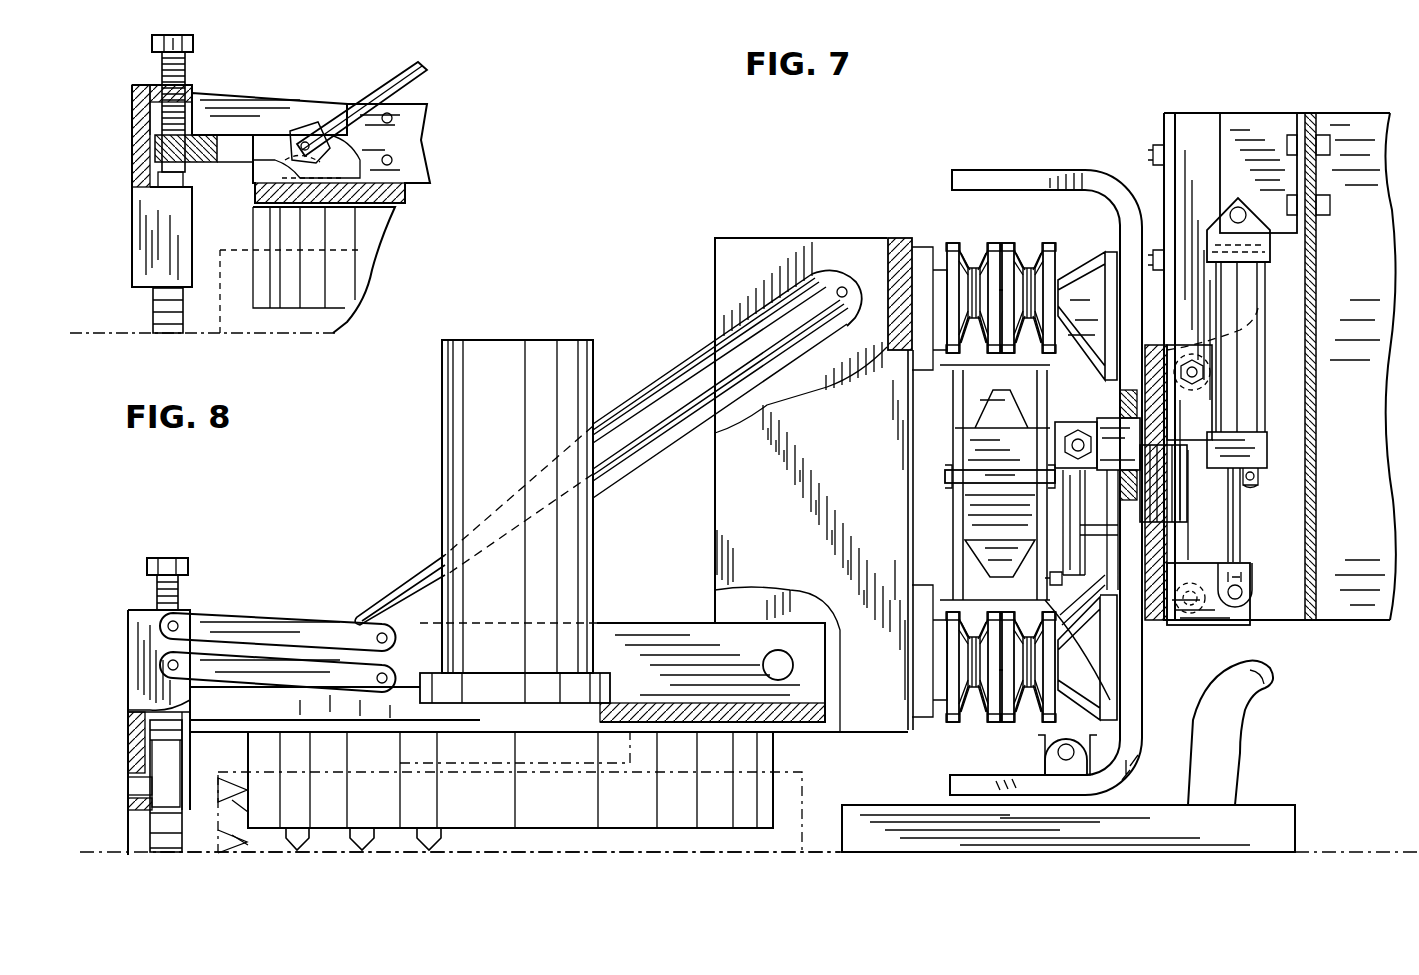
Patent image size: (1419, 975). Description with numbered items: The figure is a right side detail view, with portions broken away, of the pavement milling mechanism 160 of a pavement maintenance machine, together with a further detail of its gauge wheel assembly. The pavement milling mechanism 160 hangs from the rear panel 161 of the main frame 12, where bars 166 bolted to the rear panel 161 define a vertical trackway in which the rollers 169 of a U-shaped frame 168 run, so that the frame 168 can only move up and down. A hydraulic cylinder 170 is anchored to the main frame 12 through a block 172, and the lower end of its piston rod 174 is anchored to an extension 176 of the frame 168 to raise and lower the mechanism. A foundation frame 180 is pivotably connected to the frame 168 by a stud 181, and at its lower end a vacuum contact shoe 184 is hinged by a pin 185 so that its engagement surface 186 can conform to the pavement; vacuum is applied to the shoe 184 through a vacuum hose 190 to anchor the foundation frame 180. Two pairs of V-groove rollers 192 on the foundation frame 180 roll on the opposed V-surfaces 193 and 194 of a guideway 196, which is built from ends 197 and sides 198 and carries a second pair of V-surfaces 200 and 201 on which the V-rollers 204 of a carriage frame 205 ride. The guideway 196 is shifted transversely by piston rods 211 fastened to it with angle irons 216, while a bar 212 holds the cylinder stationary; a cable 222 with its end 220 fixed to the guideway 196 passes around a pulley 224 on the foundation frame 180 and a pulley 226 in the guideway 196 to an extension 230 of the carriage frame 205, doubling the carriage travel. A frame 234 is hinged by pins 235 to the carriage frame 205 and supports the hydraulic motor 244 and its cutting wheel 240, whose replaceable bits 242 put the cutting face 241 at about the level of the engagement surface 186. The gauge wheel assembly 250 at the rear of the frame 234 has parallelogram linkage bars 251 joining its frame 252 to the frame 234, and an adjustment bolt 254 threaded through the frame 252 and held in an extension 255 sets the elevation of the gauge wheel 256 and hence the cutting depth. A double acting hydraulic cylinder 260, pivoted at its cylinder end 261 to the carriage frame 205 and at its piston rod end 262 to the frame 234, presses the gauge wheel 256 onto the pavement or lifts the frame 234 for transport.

In FIG. 7, the main frame 12 is at (1350, 113).
In FIG. 7, the pavement milling mechanism 160 is at (611, 269).
In FIG. 7, the rear panel 161 is at (1318, 240).
In FIG. 7, the bars 166 is at (1164, 135).
In FIG. 7, the U-shaped frame 168 is at (1152, 622).
In FIG. 7, the rollers 169 is at (1260, 330).
In FIG. 7, the hydraulic cylinder 170 is at (1245, 285).
In FIG. 7, the block 172 is at (1243, 115).
In FIG. 7, the piston rod 174 is at (1240, 520).
In FIG. 7, the extension 176 is at (1240, 628).
In FIG. 7, the foundation frame 180 is at (1040, 170).
In FIG. 7, the stud 181 is at (1189, 462).
In FIG. 7, the vacuum contact shoe 184 is at (983, 852).
In FIG. 7, the pin 185 is at (1056, 752).
In FIG. 7, the engagement surface 186 is at (1112, 873).
In FIG. 7, the vacuum hose 190 is at (1240, 758).
In FIG. 7, the V-groove rollers 192 is at (1030, 252).
In FIG. 7, the V-surface 193 is at (1062, 340).
In FIG. 7, the V-surface 194 is at (1100, 690).
In FIG. 7, the guideway 196 is at (887, 433).
In FIG. 7, the ends 197 is at (1050, 345).
In FIG. 7, the sides 198 is at (1038, 530).
In FIG. 7, the V-surface 200 is at (950, 330).
In FIG. 7, the V-surface 201 is at (900, 568).
In FIG. 7, the V-rollers 204 is at (958, 252).
In FIG. 7, the carriage frame 205 is at (762, 245).
In FIG. 7, the piston rods 211 is at (1100, 408).
In FIG. 7, the bar 212 is at (1167, 400).
In FIG. 7, the angle irons 216 is at (1067, 401).
In FIG. 7, the cable end 220 is at (1062, 580).
In FIG. 7, the cable 222 is at (1060, 485).
In FIG. 7, the pulley 224 is at (1150, 548).
In FIG. 7, the pulley 226 is at (1028, 465).
In FIG. 7, the extension 230 is at (945, 478).
In FIG. 8, the frame 234 is at (415, 118).
In FIG. 7, the frame 234 is at (622, 647).
In FIG. 7, the pins 235 is at (757, 654).
In FIG. 8, the cutting wheel 240 is at (380, 235).
In FIG. 7, the cutting wheel 240 is at (560, 832).
In FIG. 8, the cutting face 241 is at (262, 333).
In FIG. 7, the cutting face 241 is at (468, 852).
In FIG. 7, the bits 242 is at (405, 850).
In FIG. 7, the hydraulic motor 244 is at (565, 340).
In FIG. 8, the gauge wheel assembly 250 is at (166, 179).
In FIG. 7, the gauge wheel assembly 250 is at (157, 686).
In FIG. 8, the parallelogram linkage bars 251 is at (220, 126).
In FIG. 7, the parallelogram linkage bars 251 is at (213, 660).
In FIG. 8, the gauge wheel assembly frame 252 is at (132, 150).
In FIG. 7, the gauge wheel assembly frame 252 is at (135, 698).
In FIG. 8, the adjustment bolt 254 is at (186, 42).
In FIG. 7, the adjustment bolt 254 is at (170, 560).
In FIG. 8, the extension 255 is at (232, 165).
In FIG. 7, the extension 255 is at (196, 688).
In FIG. 8, the gauge wheel 256 is at (154, 305).
In FIG. 7, the gauge wheel 256 is at (150, 832).
In FIG. 8, the hydraulic cylinder 260 is at (382, 82).
In FIG. 7, the hydraulic cylinder 260 is at (614, 414).
In FIG. 7, the cylinder end 261 is at (838, 278).
In FIG. 8, the piston rod end 262 is at (302, 125).